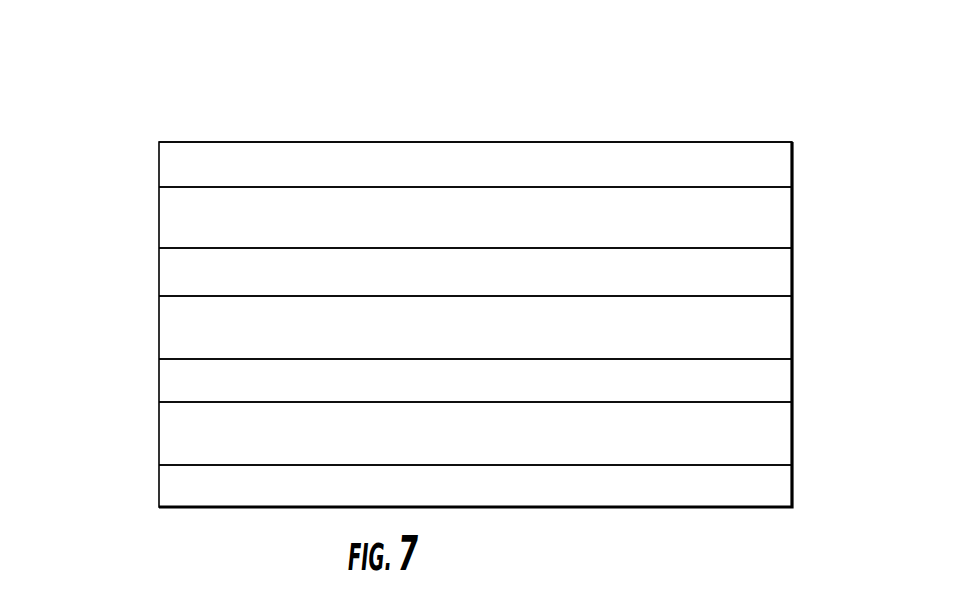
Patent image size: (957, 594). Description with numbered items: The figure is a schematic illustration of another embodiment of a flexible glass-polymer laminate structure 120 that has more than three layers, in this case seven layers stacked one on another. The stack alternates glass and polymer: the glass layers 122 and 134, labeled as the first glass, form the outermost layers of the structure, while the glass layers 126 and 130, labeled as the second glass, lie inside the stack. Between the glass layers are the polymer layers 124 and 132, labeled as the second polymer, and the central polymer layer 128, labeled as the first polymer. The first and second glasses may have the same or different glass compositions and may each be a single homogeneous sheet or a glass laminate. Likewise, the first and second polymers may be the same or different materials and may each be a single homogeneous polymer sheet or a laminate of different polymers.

The flexible glass-polymer laminate structure 120 is at (632, 88).
The glass layer 122 is at (154, 165).
The polymer layer 124 is at (154, 222).
The glass layer 126 is at (154, 281).
The polymer layer 128 is at (154, 331).
The glass layer 130 is at (154, 377).
The polymer layer 132 is at (154, 437).
The glass layer 134 is at (154, 487).